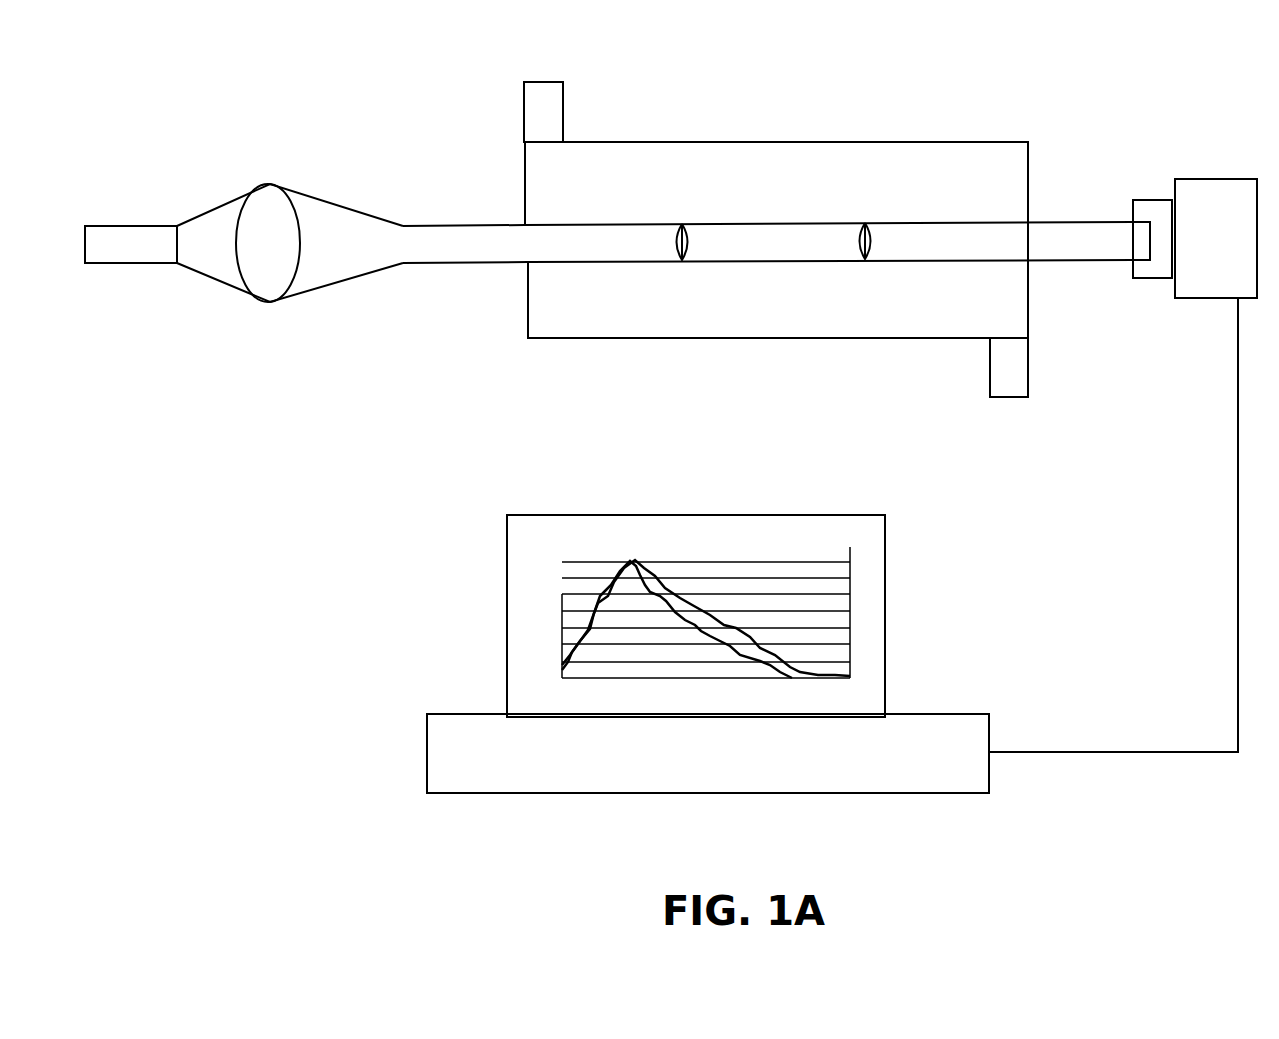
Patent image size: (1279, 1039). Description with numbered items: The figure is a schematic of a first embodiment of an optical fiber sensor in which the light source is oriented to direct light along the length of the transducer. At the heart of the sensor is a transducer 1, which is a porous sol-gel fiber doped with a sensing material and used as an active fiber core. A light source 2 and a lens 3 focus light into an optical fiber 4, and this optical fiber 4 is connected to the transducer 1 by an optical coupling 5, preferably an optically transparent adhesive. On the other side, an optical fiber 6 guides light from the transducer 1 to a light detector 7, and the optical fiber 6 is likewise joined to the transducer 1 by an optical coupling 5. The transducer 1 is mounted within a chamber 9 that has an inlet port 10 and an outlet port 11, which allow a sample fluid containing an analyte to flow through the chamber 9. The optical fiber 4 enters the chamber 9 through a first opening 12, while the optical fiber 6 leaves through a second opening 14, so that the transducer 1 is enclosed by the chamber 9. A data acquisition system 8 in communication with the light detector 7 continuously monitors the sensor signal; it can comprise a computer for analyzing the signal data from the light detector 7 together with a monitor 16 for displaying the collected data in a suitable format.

The transducer 1 is at (816, 262).
The light source 2 is at (133, 218).
The lens 3 is at (274, 306).
The optical fiber 4 is at (488, 268).
The optical coupling 5 is at (686, 220).
The optical fiber 6 is at (1106, 266).
The light detector 7 is at (1206, 304).
The data acquisition system 8 is at (708, 753).
The chamber 9 is at (796, 344).
The inlet port 10 is at (1016, 404).
The outlet port 11 is at (552, 82).
The first opening 12 is at (518, 216).
The second opening 14 is at (1034, 214).
The monitor 16 is at (728, 504).